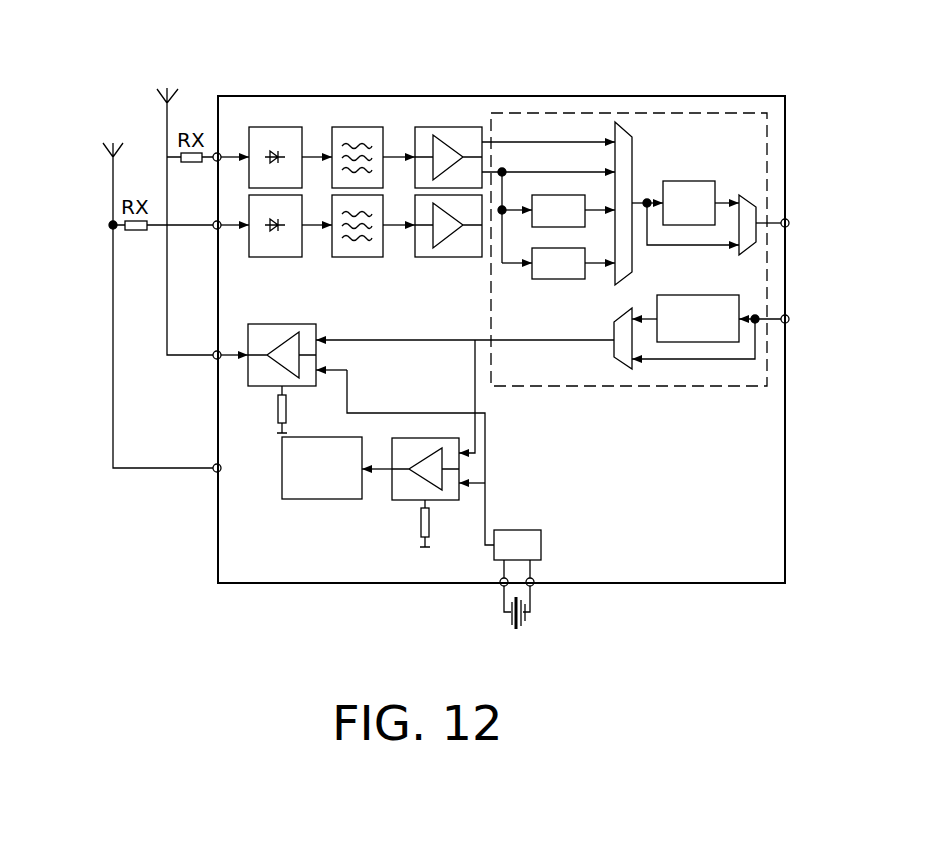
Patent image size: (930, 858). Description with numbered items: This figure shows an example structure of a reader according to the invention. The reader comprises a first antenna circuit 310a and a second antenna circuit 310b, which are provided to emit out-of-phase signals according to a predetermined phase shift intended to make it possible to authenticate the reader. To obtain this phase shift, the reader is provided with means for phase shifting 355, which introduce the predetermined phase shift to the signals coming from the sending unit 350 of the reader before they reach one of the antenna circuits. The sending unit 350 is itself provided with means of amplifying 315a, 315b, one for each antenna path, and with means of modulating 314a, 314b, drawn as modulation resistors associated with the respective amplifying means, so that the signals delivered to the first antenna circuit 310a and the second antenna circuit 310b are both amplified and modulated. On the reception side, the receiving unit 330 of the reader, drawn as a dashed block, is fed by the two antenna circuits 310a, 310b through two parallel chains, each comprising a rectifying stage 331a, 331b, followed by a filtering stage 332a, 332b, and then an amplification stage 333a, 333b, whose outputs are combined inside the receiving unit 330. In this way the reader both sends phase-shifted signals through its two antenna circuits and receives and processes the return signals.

The first antenna circuit 310a is at (140, 412).
The second antenna circuit 310b is at (198, 263).
The means of modulating 314a is at (273, 422).
The means of modulating 314b is at (438, 522).
The means of amplifying 315a is at (327, 350).
The means of amplifying 315b is at (478, 465).
The receiving unit 330 is at (392, 113).
The rectifying stage 331a is at (275, 124).
The rectifying stage 331b is at (270, 263).
The filtering stage 332a is at (357, 124).
The filtering stage 332b is at (358, 263).
The amplification stage 333a is at (447, 124).
The amplification stage 333b is at (457, 263).
The sending unit 350 is at (380, 556).
The means for phase shifting 355 is at (310, 488).